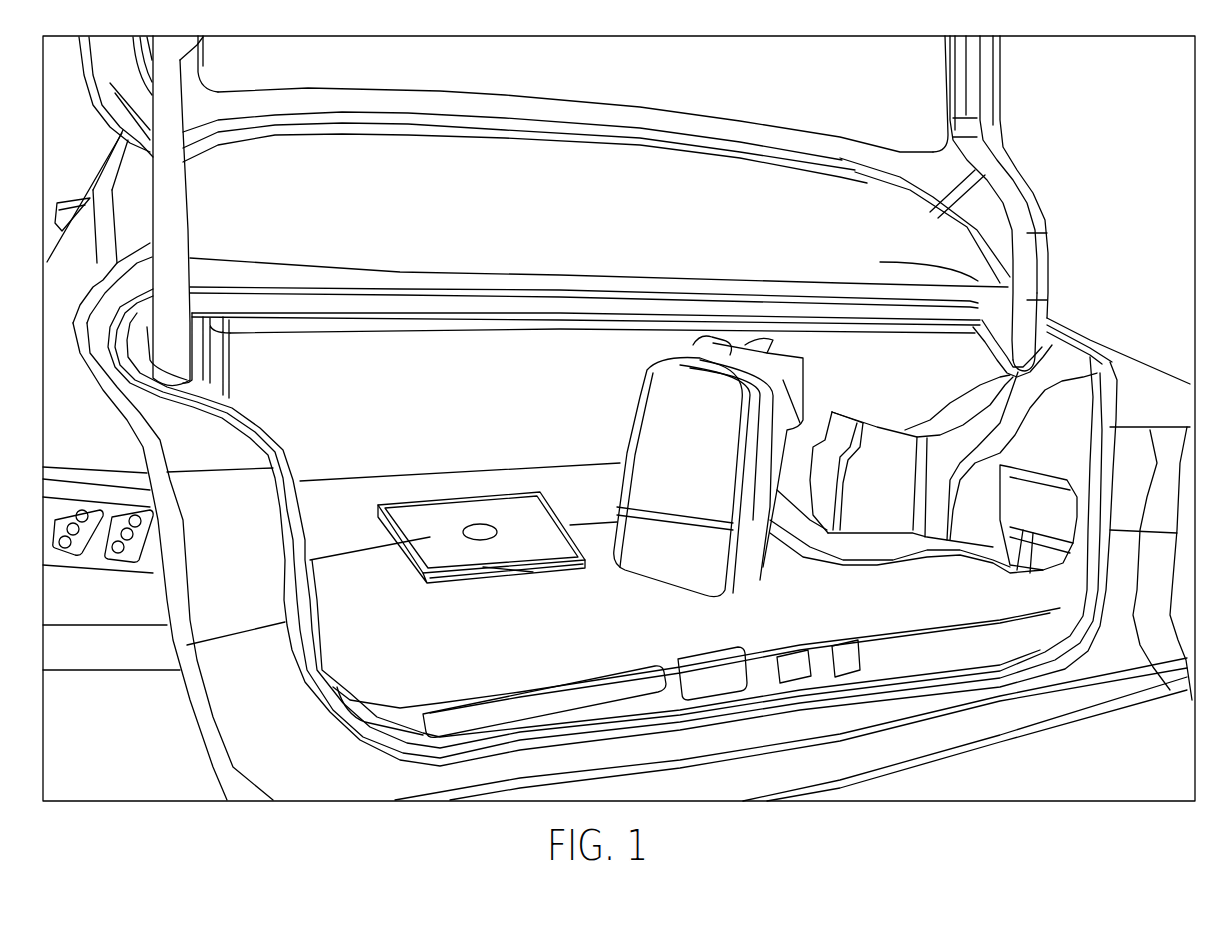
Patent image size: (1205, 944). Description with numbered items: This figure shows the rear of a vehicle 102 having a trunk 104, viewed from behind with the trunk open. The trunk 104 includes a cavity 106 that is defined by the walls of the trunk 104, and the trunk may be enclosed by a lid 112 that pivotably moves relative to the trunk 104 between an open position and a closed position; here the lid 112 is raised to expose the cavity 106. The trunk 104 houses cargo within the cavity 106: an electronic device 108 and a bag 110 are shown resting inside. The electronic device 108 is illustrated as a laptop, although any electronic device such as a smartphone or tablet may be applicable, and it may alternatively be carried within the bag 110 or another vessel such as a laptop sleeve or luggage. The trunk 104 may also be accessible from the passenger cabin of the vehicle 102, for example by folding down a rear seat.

The vehicle 102 is at (903, 253).
The trunk 104 is at (1048, 453).
The cavity 106 is at (1129, 355).
The electronic device 108 is at (457, 508).
The bag 110 is at (660, 407).
The lid 112 is at (917, 100).